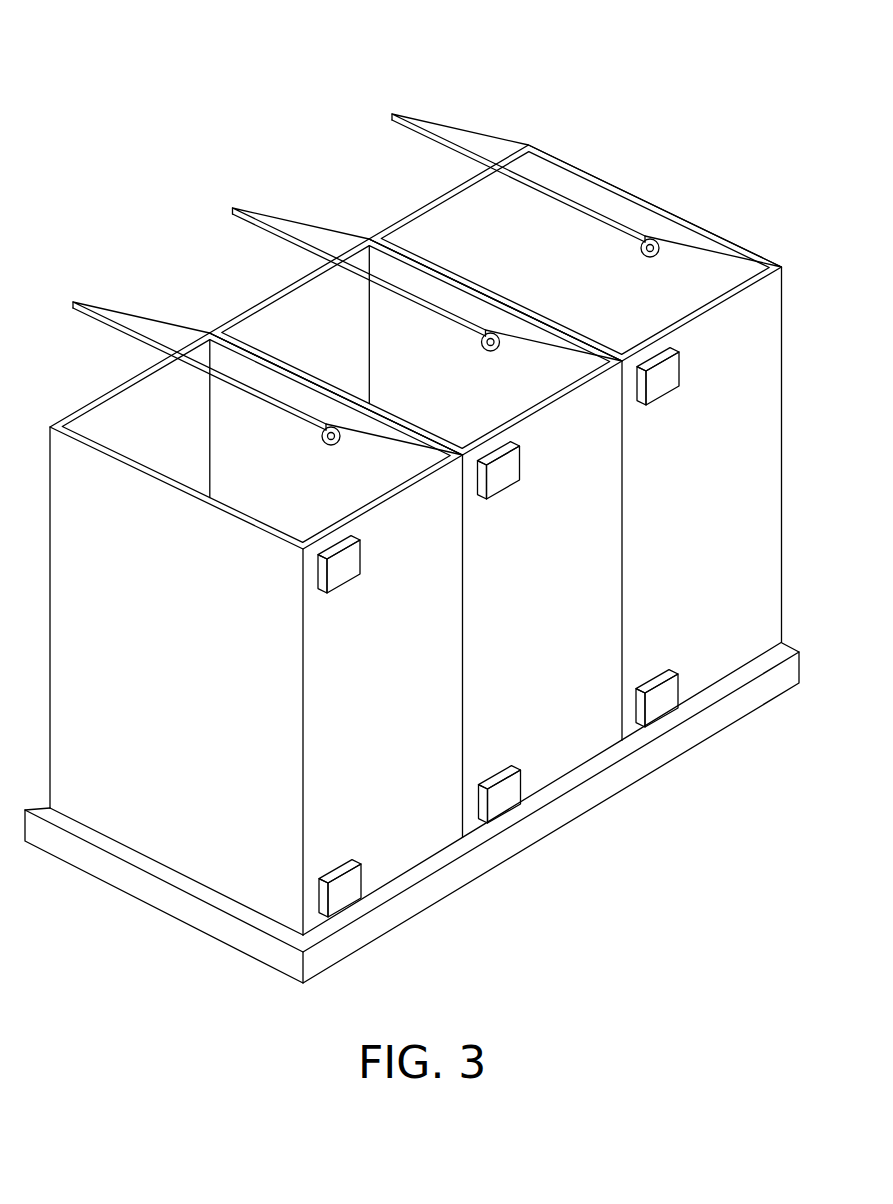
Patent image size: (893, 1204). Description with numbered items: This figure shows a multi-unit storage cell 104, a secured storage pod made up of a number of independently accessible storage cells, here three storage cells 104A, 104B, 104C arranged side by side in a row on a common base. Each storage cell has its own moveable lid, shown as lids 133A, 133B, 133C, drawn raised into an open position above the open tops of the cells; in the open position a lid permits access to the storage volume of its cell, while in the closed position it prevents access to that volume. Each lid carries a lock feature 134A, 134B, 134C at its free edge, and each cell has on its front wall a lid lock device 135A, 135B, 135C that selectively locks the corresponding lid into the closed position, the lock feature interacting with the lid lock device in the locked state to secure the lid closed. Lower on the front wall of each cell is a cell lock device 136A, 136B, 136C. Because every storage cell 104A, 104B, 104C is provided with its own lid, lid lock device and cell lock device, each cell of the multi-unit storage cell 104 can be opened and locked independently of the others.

The multi-unit storage cell 104 is at (112, 112).
The storage cell 104A is at (256, 634).
The storage cell 104B is at (416, 538).
The storage cell 104C is at (575, 442).
The moveable lid 133A is at (193, 343).
The moveable lid 133B is at (352, 248).
The moveable lid 133C is at (512, 150).
The lock feature 134A is at (322, 442).
The lock feature 134B is at (481, 347).
The lock feature 134C is at (641, 252).
The lid lock device 135A is at (342, 584).
The lid lock device 135B is at (502, 490).
The lid lock device 135C is at (662, 396).
The cell lock device 136A is at (340, 876).
The cell lock device 136B is at (500, 782).
The cell lock device 136C is at (657, 686).